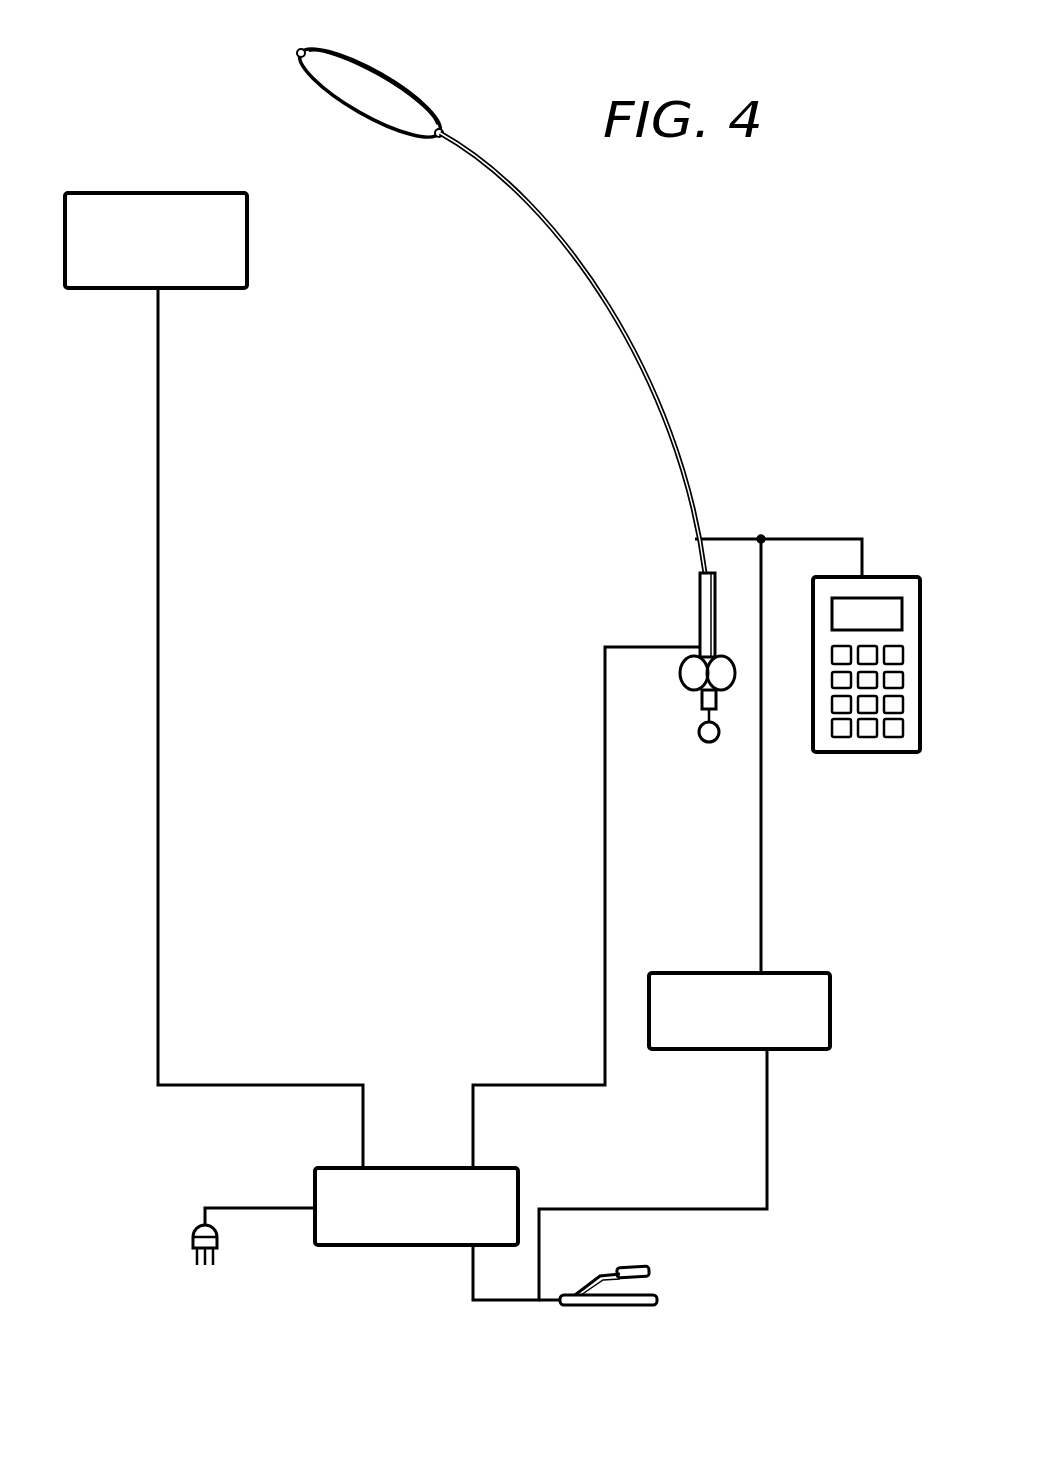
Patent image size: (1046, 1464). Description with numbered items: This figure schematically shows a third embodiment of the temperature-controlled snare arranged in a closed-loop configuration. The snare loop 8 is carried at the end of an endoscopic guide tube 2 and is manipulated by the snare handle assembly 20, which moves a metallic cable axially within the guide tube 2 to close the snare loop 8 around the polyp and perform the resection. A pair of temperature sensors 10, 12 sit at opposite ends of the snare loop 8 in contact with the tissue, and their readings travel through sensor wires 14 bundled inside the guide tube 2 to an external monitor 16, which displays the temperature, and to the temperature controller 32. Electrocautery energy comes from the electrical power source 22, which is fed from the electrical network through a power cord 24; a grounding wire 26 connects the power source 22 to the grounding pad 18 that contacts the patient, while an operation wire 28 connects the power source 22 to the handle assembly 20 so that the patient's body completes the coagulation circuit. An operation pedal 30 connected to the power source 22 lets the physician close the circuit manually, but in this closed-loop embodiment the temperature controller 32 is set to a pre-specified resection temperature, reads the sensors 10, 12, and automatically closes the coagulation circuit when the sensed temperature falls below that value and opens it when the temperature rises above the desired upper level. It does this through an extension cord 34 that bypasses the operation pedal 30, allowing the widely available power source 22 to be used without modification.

The endoscopic guide tube 2 is at (612, 312).
The snare loop 8 is at (355, 116).
The temperature sensor 10 is at (300, 50).
The temperature sensor 12 is at (441, 140).
The sensor wires 14 is at (396, 77).
The external monitor 16 is at (895, 755).
The grounding pad 18 is at (247, 262).
The snare handle assembly 20 is at (700, 622).
The electrical power source 22 is at (519, 1166).
The power cord 24 is at (205, 1208).
The grounding wire 26 is at (157, 590).
The operation wire 28 is at (605, 838).
The operation pedal 30 is at (645, 1306).
The temperature controller 32 is at (830, 1017).
The extension cord 34 is at (768, 1152).